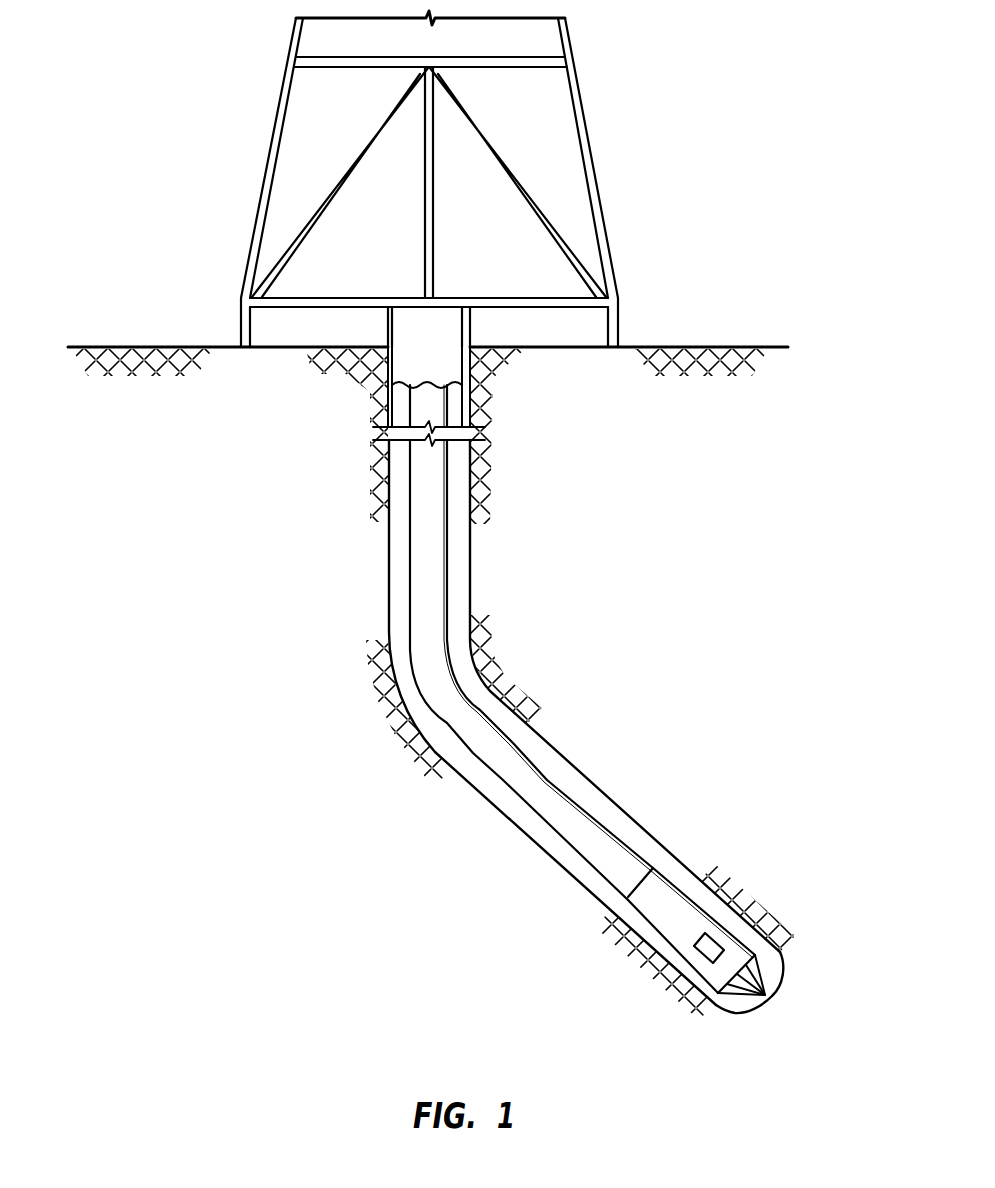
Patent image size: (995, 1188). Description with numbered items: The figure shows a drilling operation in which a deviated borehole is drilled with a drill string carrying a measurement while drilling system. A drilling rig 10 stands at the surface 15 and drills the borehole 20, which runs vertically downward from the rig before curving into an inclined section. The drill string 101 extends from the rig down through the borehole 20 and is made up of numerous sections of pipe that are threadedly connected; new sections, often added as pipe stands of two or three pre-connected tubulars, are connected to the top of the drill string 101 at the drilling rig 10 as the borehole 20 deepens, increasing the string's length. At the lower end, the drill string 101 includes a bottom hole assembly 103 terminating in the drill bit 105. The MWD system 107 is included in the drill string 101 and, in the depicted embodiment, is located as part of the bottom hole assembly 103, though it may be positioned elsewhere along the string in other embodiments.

The drilling rig 10 is at (575, 77).
The surface 15 is at (743, 347).
The borehole 20 is at (496, 810).
The drill string 101 is at (407, 542).
The bottom hole assembly 103 is at (672, 878).
The drill bit 105 is at (740, 1000).
The MWD system 107 is at (693, 943).